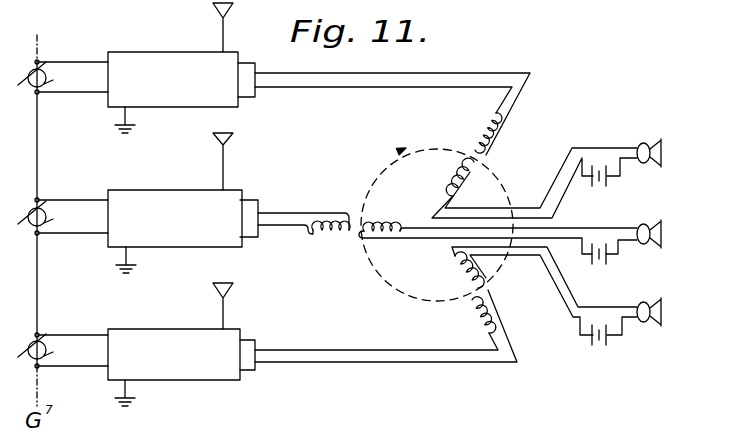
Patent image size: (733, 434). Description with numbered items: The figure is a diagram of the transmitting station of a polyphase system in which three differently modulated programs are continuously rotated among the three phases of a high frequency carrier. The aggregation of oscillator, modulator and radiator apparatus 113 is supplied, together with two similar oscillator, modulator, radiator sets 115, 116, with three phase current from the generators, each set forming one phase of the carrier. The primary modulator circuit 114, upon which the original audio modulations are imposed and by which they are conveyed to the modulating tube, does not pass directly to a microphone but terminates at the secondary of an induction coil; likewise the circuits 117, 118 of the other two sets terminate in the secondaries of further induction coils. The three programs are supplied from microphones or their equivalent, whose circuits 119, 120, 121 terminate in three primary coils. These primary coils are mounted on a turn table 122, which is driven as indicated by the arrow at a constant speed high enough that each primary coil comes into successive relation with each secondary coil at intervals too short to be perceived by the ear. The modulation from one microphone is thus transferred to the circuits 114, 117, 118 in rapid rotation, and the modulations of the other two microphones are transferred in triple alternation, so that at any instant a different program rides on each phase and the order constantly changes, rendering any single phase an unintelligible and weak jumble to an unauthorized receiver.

The oscillator, modulator and radiator apparatus 113 is at (165, 42).
The primary modulator circuit 114 is at (420, 69).
The oscillator, modulator, radiator set 115 is at (175, 179).
The oscillator, modulator, radiator set 116 is at (175, 322).
The modulator circuit 117 is at (286, 201).
The modulator circuit 118 is at (392, 342).
The microphone circuit 119 is at (560, 170).
The microphone circuit 120 is at (570, 223).
The microphone circuit 121 is at (572, 300).
The turn table 122 is at (398, 280).